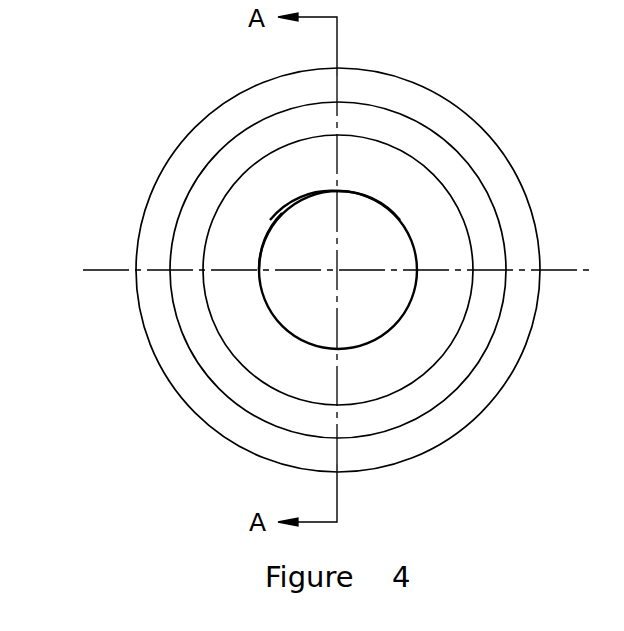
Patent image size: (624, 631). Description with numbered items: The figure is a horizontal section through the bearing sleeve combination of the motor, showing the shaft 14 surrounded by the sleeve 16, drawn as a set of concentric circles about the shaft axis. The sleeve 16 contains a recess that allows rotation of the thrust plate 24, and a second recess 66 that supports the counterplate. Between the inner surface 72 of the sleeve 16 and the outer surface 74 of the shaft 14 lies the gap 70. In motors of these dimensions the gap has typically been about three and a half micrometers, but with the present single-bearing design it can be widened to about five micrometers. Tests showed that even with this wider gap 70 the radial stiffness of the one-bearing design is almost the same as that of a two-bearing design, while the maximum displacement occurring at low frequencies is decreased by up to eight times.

The sleeve 16 is at (108, 375).
The shaft 14 is at (338, 270).
The thrust plate 24 is at (338, 270).
The second recess 66 is at (338, 270).
The gap 70 is at (263, 238).
The inner surface 72 is at (282, 213).
The outer surface 74 is at (372, 195).